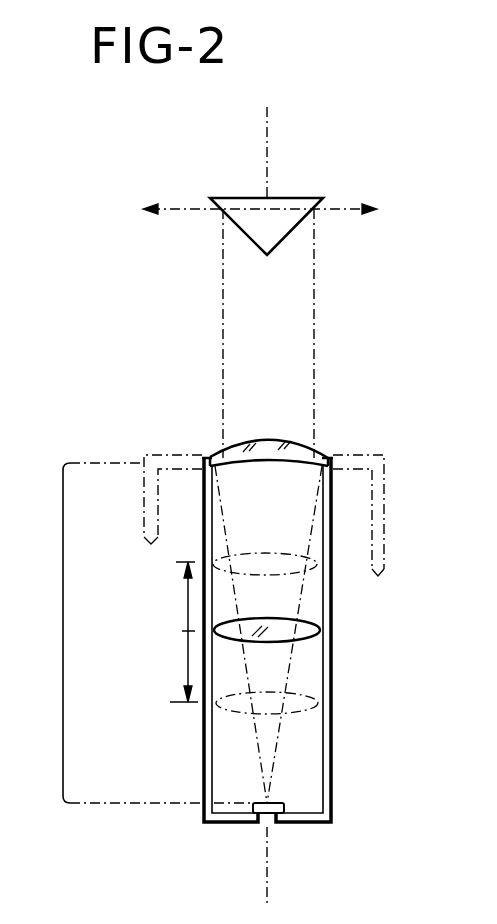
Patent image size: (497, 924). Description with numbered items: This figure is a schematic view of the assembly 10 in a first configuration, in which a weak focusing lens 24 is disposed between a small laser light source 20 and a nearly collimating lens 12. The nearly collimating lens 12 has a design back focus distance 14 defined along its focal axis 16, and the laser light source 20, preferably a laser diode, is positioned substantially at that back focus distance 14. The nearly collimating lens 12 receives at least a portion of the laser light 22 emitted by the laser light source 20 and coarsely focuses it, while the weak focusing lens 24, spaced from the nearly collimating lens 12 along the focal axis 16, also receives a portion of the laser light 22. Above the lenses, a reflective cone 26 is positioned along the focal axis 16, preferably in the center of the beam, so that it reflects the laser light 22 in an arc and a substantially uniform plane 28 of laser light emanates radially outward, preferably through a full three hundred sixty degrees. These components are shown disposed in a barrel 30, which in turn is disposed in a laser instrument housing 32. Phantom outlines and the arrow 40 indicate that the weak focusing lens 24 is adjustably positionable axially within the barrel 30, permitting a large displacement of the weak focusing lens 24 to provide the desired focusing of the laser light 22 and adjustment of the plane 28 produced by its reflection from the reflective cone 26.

The assembly 10 is at (166, 837).
The nearly collimating lens 12 is at (296, 452).
The design back focus distance 14 is at (49, 607).
The focal axis 16 is at (270, 878).
The laser light source 20 is at (275, 802).
The laser light 22 is at (292, 682).
The weak focusing lens 24 is at (313, 625).
The reflective cone 26 is at (282, 207).
The plane of laser light 28 is at (175, 208).
The barrel 30 is at (333, 530).
The laser instrument housing 32 is at (387, 488).
The arrow 40 is at (188, 653).